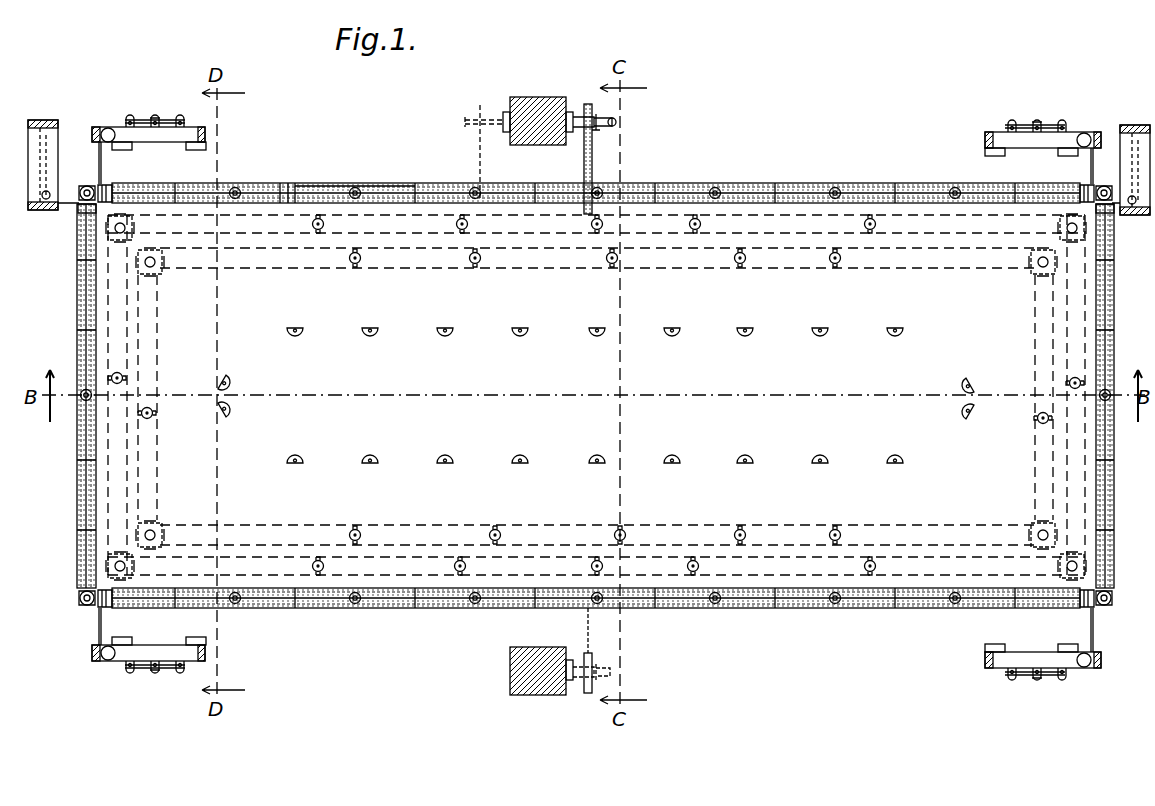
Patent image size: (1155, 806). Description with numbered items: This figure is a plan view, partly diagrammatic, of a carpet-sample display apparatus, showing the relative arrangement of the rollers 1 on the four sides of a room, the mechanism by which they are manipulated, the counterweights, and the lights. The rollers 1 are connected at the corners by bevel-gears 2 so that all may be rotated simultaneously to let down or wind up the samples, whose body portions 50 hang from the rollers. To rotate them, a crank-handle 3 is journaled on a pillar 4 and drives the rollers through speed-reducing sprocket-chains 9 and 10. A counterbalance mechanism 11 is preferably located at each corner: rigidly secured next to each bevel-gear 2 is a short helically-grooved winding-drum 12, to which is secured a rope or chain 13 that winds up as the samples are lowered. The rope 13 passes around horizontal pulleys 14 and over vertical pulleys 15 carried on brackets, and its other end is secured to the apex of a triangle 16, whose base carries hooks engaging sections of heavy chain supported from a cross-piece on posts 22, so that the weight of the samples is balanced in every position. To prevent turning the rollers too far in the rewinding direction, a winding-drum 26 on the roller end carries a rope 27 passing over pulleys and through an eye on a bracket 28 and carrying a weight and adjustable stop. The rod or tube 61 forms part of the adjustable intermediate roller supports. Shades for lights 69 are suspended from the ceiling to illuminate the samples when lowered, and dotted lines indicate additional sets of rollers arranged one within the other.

The rollers 1 is at (690, 185).
The bevel-gears 2 is at (96, 190).
The crank-handle 3 is at (600, 118).
The pillar 4 is at (552, 104).
The sprocket-chain 9 is at (584, 140).
The sprocket-chain 10 is at (592, 150).
The counterbalance mechanism 11 is at (140, 128).
The winding-drum 12 is at (106, 203).
The rope or chain 13 is at (99, 160).
The horizontal pulleys 14 is at (106, 127).
The vertical pulleys 15 is at (160, 120).
The triangles 16 is at (183, 122).
The posts 22 is at (130, 150).
The winding-drum 26 is at (80, 212).
The rope 27 is at (68, 201).
The bracket 28 is at (50, 143).
The body portions 50 is at (318, 183).
The supporting rod or tube 61 is at (284, 183).
The shades for lights 69 is at (893, 460).